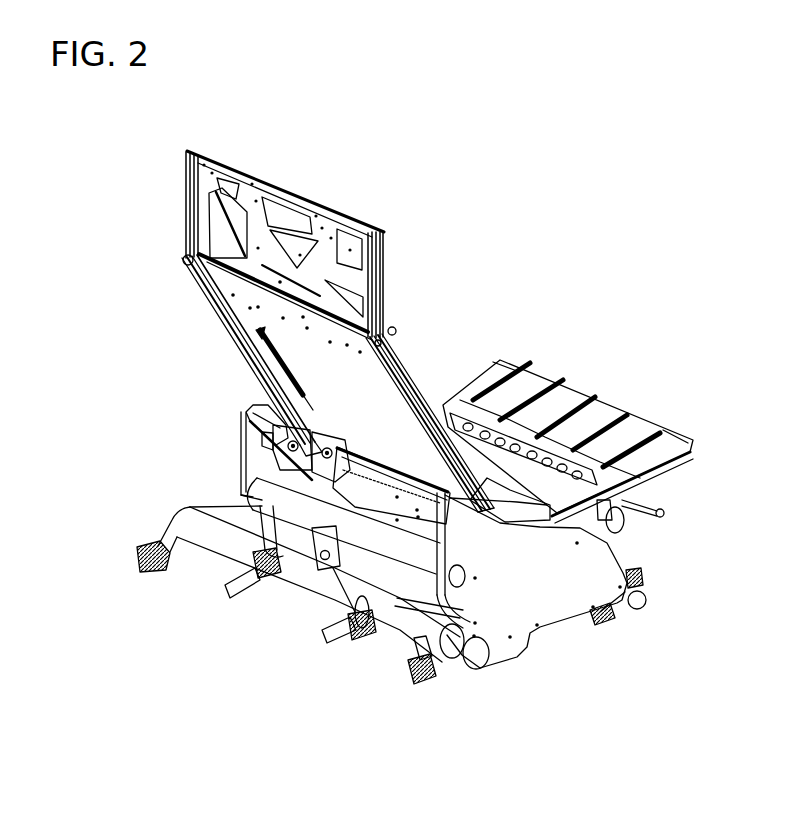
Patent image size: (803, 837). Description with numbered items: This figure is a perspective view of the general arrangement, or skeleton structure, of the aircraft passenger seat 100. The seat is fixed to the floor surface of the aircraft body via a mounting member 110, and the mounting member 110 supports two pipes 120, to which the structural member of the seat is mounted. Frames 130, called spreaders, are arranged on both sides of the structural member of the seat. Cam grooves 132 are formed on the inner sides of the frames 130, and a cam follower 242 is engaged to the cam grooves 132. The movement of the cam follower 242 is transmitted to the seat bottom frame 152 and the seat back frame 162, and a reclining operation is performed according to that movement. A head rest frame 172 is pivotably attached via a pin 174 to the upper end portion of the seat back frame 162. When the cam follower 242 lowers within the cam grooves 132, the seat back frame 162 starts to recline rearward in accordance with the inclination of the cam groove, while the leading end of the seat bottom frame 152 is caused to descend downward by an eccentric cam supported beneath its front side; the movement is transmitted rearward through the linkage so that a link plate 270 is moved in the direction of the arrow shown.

The aircraft passenger seat 100 is at (505, 222).
The mounting member 110 is at (421, 678).
The pipes 120 is at (312, 586).
The frames (spreaders) 130 is at (245, 468).
The cam grooves 132 is at (240, 413).
The seat bottom frame 152 is at (554, 410).
The seat back frame 162 is at (243, 305).
The head rest frame 172 is at (207, 212).
The pin 174 is at (393, 330).
The cam follower 242 is at (262, 434).
The link plate 270 is at (257, 352).